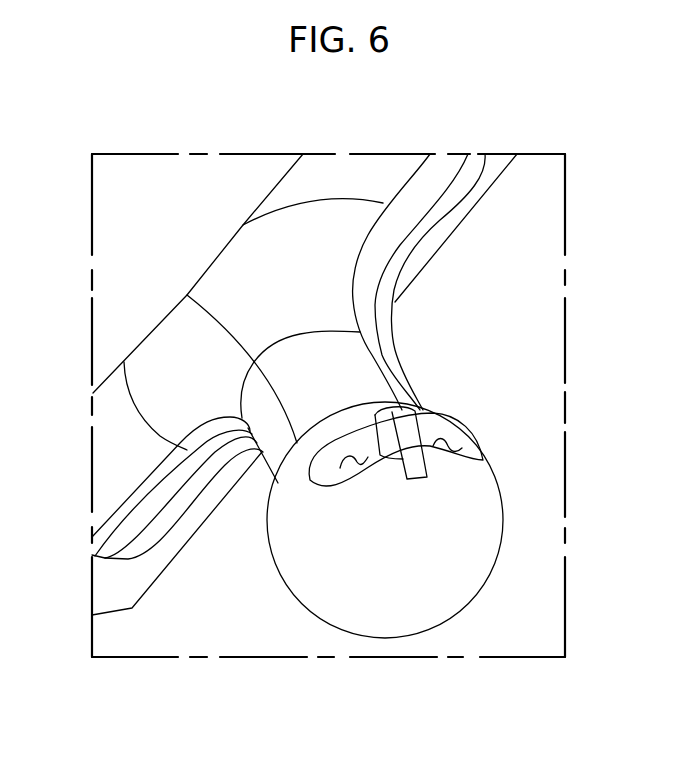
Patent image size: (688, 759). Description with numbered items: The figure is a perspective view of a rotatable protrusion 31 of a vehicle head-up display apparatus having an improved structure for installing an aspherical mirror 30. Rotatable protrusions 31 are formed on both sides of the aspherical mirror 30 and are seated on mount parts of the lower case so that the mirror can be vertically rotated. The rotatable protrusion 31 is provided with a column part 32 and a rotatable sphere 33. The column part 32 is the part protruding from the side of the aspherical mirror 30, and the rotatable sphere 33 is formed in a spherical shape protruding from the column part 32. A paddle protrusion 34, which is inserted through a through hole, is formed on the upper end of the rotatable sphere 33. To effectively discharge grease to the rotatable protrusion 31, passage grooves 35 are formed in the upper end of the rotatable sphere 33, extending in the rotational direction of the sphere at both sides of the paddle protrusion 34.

The aspherical mirror 30 is at (132, 220).
The rotatable protrusion 31 is at (236, 500).
The column part 32 is at (343, 367).
The rotatable sphere 33 is at (450, 563).
The paddle protrusion 34 is at (410, 433).
The passage groove 35 is at (445, 452).